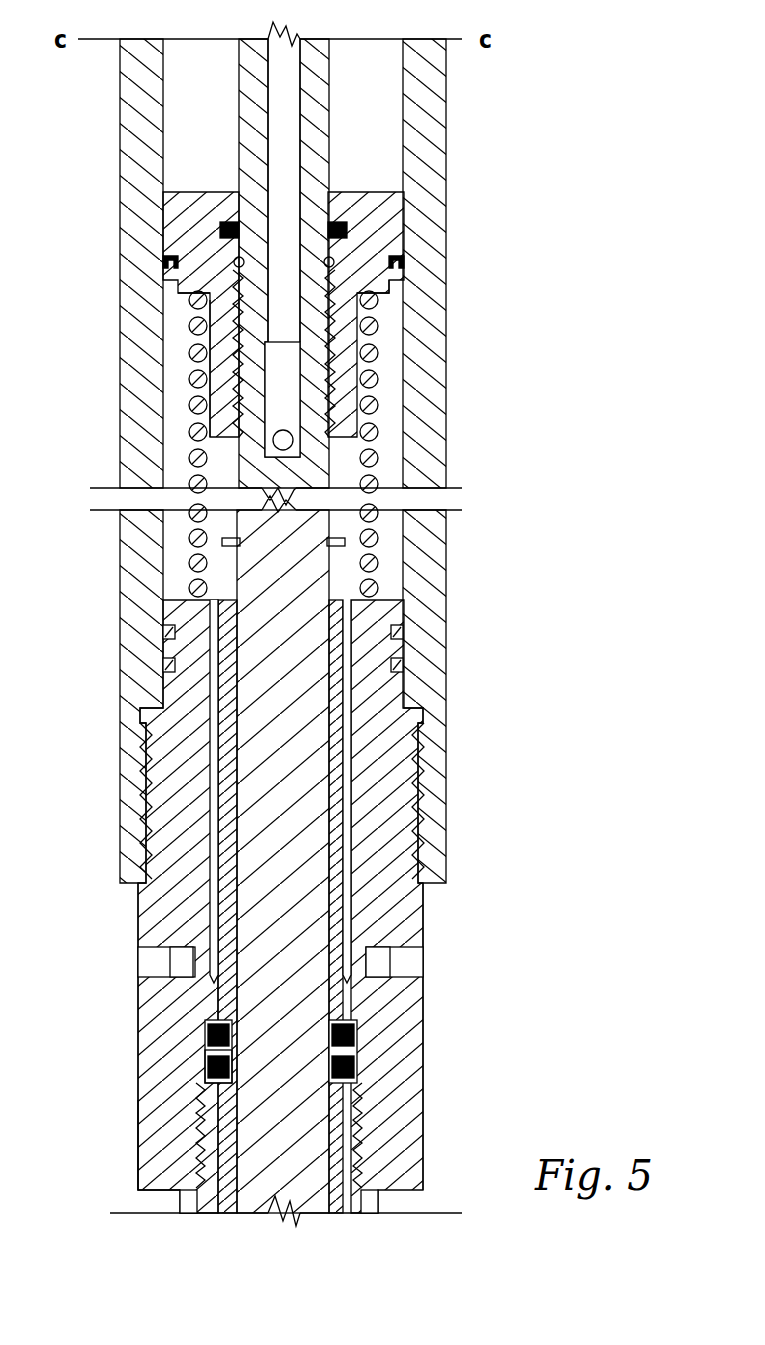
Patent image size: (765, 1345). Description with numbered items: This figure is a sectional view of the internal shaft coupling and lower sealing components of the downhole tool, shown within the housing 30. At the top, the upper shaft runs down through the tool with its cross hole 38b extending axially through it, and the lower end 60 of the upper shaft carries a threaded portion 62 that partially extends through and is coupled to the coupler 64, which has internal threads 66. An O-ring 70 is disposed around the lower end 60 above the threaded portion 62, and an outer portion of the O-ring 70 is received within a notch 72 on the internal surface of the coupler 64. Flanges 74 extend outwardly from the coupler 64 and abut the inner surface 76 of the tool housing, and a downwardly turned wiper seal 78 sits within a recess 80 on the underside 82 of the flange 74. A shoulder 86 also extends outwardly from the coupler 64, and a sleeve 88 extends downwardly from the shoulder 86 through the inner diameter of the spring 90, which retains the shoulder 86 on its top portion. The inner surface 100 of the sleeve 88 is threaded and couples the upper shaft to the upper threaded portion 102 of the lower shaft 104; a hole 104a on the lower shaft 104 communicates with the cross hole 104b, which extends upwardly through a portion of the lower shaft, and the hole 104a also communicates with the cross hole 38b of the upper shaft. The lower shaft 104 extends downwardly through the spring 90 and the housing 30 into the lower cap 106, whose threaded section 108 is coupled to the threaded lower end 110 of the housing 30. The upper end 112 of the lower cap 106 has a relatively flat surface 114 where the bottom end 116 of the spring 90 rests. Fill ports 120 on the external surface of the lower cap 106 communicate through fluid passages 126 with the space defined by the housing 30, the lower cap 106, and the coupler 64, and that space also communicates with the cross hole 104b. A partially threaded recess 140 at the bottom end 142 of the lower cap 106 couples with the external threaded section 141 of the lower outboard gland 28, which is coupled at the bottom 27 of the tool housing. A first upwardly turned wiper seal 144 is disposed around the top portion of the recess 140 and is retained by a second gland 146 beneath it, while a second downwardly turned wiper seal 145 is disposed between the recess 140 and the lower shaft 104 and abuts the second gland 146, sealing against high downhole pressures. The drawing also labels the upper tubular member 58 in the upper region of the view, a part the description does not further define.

The bottom of tool housing 27 is at (178, 1200).
The lower outboard gland 28 is at (378, 1206).
The housing 30 is at (446, 634).
The cross hole 38b is at (287, 120).
The inner tube 58 is at (329, 143).
The lower end of upper shaft 60 is at (288, 340).
The threaded portion 62 is at (215, 312).
The coupler 64 is at (336, 340).
The internal threads 66 is at (378, 358).
The O-ring 70 is at (405, 229).
The notch 72 is at (222, 230).
The flanges 74 is at (185, 192).
The inner surface 76 is at (164, 143).
The downwardly turned wiper seal 78 is at (400, 262).
The recess 80 is at (165, 263).
The underside of flange 82 is at (392, 286).
The shoulder 86 is at (378, 302).
The sleeve 88 is at (378, 412).
The spring 90 is at (380, 546).
The inner surface of sleeve 100 is at (340, 386).
The upper threaded portion 102 is at (380, 463).
The lower shaft 104 is at (300, 582).
The hole 104a is at (262, 385).
The cross hole 104b is at (215, 463).
The lower cap 106 is at (392, 751).
The threaded section 108 is at (418, 900).
The threaded lower end 110 is at (446, 822).
The upper end of lower cap 112 is at (172, 614).
The flat surface 114 is at (190, 590).
The bottom end of spring 116 is at (190, 547).
The fill ports 120 is at (170, 966).
The fluid passages 126 is at (209, 896).
The partially threaded recess 140 is at (360, 1079).
The external threaded section 141 is at (215, 1069).
The bottom end of lower cap 142 is at (138, 1162).
The first upwardly turned wiper seal 144 is at (212, 1020).
The second downwardly turned wiper seal 145 is at (354, 1052).
The second gland 146 is at (354, 1031).